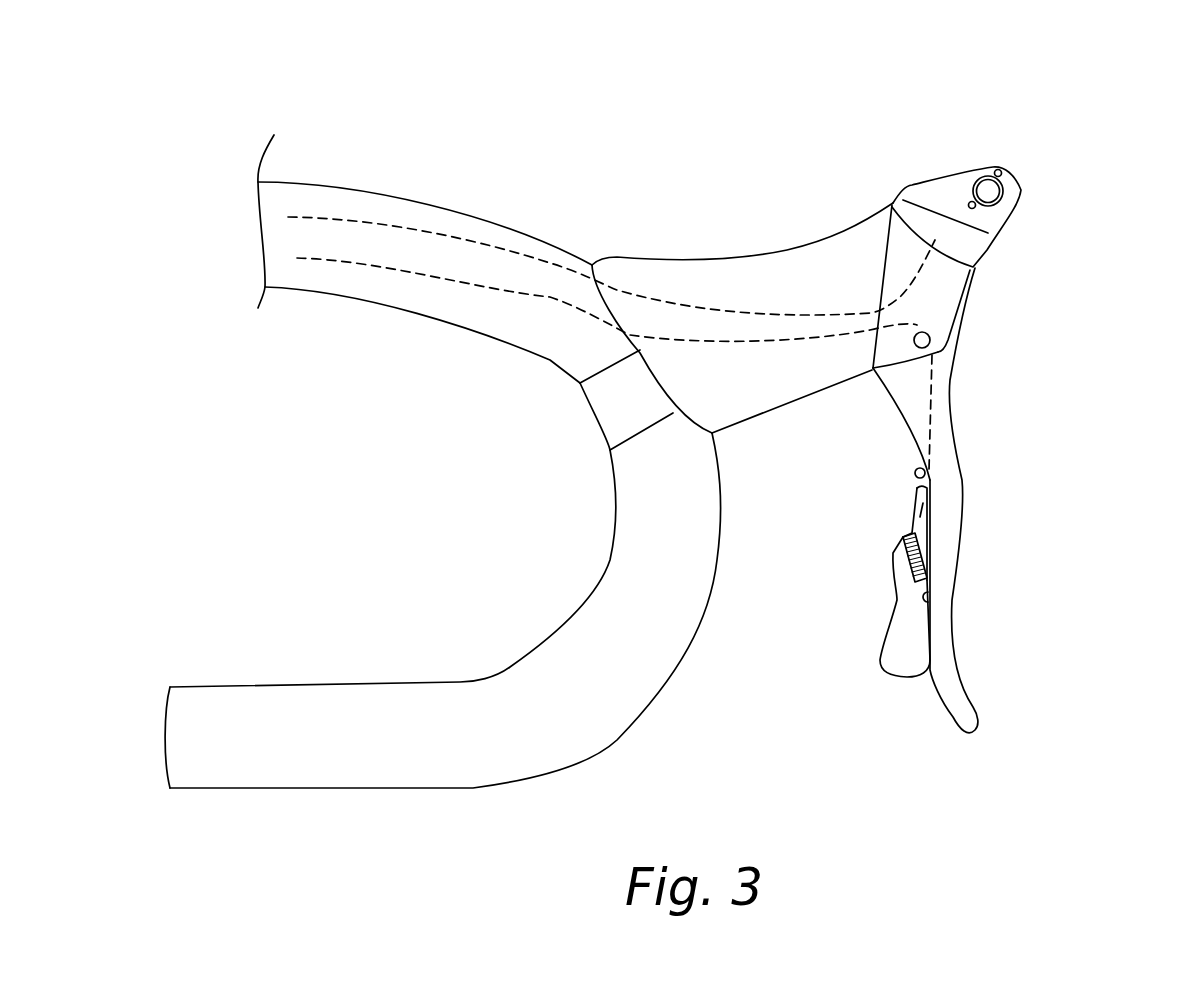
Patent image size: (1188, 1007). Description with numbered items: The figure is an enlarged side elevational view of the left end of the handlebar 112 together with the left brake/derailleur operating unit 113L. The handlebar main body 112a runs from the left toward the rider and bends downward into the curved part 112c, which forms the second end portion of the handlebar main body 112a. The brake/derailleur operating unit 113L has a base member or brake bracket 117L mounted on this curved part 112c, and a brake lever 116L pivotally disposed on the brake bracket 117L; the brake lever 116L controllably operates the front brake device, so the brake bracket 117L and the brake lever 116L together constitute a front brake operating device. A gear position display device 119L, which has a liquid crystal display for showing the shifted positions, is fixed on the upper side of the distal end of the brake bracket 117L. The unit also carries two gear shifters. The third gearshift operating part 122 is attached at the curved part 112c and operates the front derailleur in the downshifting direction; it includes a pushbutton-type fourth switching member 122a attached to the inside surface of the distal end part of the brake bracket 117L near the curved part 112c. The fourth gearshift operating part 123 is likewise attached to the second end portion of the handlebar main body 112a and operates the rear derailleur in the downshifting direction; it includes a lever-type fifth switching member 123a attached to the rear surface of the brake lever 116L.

The handlebar 112 is at (512, 410).
The handlebar main body 112a is at (516, 226).
The curved part 112c is at (712, 505).
The brake/derailleur operating unit 113L is at (868, 401).
The brake bracket 117L is at (782, 262).
The gear position display device 119L is at (1018, 158).
The third gearshift operating part 122 is at (996, 178).
The fourth switching member 122a is at (1003, 180).
The brake lever 116L is at (948, 483).
The fourth gearshift operating part 123 is at (848, 624).
The fifth switching member 123a is at (905, 573).